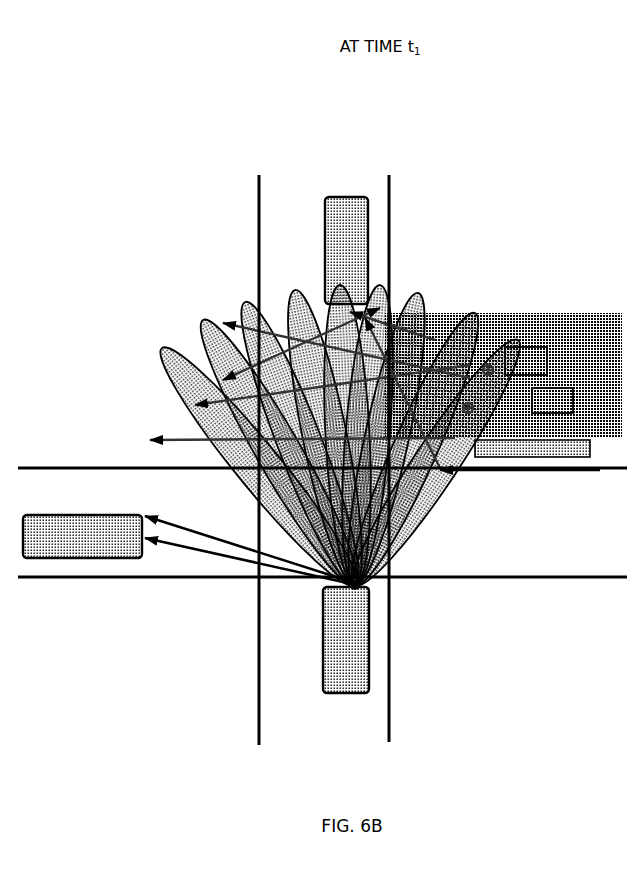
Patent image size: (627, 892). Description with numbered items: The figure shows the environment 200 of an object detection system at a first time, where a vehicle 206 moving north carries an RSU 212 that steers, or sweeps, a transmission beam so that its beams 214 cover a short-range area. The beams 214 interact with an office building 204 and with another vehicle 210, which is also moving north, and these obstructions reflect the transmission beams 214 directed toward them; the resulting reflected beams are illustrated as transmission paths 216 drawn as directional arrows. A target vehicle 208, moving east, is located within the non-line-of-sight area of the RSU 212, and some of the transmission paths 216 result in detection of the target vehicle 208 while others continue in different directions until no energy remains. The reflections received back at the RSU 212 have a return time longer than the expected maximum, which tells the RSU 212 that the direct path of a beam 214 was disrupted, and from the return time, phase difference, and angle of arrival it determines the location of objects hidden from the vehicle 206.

The environment 200 is at (207, 124).
The office building 204 is at (557, 318).
The vehicle 206 is at (347, 692).
The target vehicle 208 is at (97, 547).
The vehicle 210 is at (343, 197).
The RSU 212 is at (360, 592).
The beams 214 is at (440, 473).
The transmission paths 216 is at (185, 505).